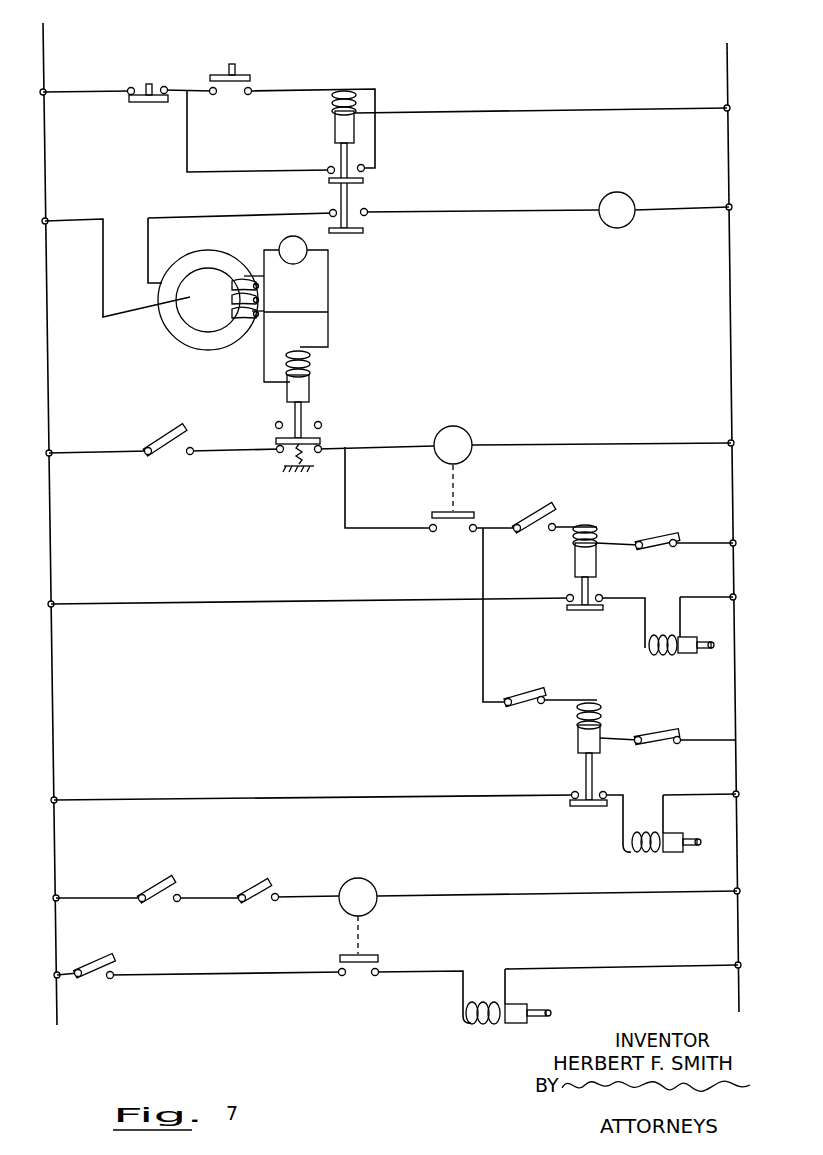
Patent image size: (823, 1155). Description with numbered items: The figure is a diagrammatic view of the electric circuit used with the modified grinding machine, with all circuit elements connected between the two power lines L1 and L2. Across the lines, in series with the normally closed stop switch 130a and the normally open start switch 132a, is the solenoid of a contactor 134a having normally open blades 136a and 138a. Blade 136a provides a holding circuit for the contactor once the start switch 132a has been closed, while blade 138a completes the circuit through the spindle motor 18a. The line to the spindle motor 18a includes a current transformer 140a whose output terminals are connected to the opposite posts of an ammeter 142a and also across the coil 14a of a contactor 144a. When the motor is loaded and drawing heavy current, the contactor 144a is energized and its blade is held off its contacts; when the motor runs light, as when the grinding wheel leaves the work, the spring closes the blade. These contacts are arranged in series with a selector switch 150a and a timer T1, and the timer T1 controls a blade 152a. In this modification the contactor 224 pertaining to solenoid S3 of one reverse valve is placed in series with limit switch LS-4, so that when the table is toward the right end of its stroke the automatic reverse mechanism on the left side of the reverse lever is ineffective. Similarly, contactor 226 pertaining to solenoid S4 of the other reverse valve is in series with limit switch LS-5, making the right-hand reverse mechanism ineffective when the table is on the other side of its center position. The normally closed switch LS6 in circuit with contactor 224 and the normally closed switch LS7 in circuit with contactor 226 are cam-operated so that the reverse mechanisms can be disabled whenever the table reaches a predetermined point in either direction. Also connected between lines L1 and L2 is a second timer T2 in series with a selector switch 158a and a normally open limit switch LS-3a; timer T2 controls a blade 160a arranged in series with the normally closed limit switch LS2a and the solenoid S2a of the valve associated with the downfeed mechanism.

The power line L1 is at (45, 512).
The power line L2 is at (723, 509).
The stop switch 130a is at (149, 86).
The start switch 132a is at (236, 70).
The contactor 134a is at (338, 128).
The blade 136a is at (364, 180).
The blade 138a is at (366, 229).
The spindle motor 18a is at (615, 195).
The ammeter 142a is at (308, 251).
The current transformer 140a is at (187, 337).
The coil 14a is at (309, 367).
The contactor 144a is at (305, 391).
The selector switch 150a is at (160, 443).
The timer T1 is at (453, 445).
The blade 152a is at (463, 510).
The limit switch LS-4 is at (562, 506).
The contactor 224 is at (593, 542).
The limit switch LS6 is at (656, 538).
The solenoid S3 is at (690, 651).
The limit switch LS-5 is at (556, 690).
The contactor 226 is at (602, 724).
The limit switch LS7 is at (690, 712).
The solenoid S4 is at (672, 848).
The selector switch 158a is at (160, 885).
The limit switch LS-3a is at (250, 887).
The timer T2 is at (358, 897).
The limit switch LS2a is at (88, 962).
The blade 160a is at (373, 954).
The solenoid S2a is at (515, 1012).